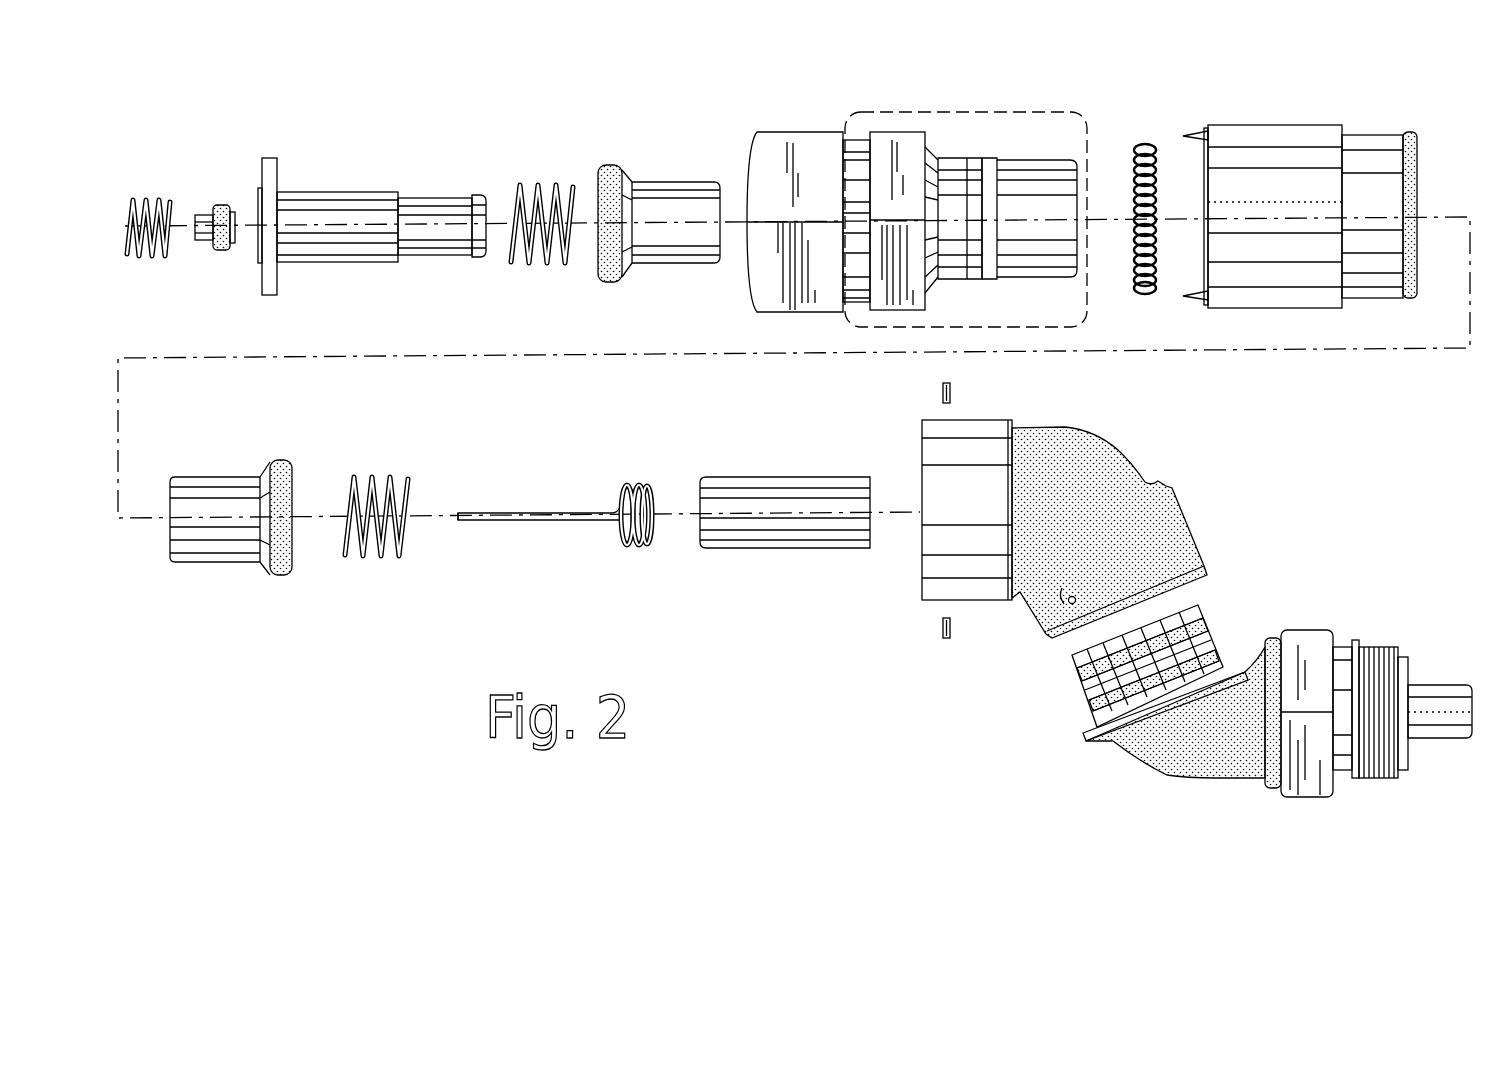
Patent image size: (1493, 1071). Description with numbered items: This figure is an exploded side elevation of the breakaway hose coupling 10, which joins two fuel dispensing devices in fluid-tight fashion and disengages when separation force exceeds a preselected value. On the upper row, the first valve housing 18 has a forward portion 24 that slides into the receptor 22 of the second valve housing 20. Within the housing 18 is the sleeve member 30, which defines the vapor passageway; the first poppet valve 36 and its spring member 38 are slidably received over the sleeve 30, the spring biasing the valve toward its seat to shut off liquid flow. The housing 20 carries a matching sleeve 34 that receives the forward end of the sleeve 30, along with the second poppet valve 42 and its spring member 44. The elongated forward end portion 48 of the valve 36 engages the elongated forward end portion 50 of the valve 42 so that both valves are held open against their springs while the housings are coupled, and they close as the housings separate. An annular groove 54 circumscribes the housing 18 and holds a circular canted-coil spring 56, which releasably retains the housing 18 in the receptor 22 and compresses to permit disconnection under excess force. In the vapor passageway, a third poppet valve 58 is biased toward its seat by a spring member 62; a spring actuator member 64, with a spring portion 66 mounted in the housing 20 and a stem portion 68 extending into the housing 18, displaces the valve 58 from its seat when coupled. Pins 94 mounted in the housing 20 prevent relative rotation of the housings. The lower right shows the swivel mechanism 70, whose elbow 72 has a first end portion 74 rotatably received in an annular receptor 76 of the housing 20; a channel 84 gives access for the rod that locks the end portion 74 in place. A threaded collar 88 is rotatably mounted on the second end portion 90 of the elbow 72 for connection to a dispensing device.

The breakaway hose coupling 10 is at (795, 457).
The first valve housing 18 is at (806, 126).
The second valve housing 20 is at (1169, 356).
The receptor 22 is at (1206, 165).
The forward portion 24 is at (1045, 162).
The sleeve member 30 is at (360, 192).
The sleeve 34 is at (778, 478).
The first poppet valve 36 is at (600, 170).
The spring member 38 is at (531, 188).
The second poppet valve 42 is at (290, 470).
The spring member 44 is at (392, 482).
The elongated forward end portion 48 is at (712, 182).
The elongated forward end portion 50 is at (208, 478).
The annular groove 54 is at (976, 160).
The circular canted-coil spring 56 is at (1143, 143).
The third poppet valve 58 is at (220, 207).
The spring member 62 is at (147, 198).
The spring actuator member 64 is at (554, 500).
The spring portion 66 is at (633, 487).
The stem portion 68 is at (477, 521).
The swivel mechanism 70 is at (1217, 711).
The elbow 72 is at (1162, 773).
The first end portion 74 is at (1208, 618).
The annular receptor 76 is at (1214, 584).
The channel 84 is at (1052, 583).
The threaded collar 88 is at (1341, 648).
The second end portion 90 is at (1272, 788).
The pins 94 is at (1190, 134).